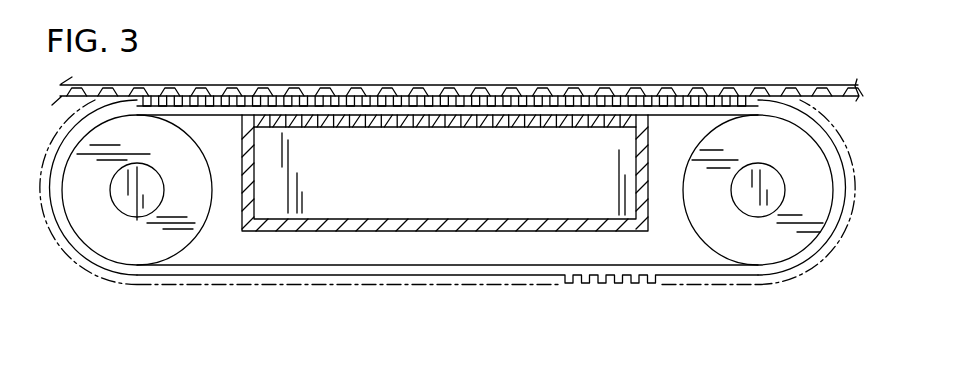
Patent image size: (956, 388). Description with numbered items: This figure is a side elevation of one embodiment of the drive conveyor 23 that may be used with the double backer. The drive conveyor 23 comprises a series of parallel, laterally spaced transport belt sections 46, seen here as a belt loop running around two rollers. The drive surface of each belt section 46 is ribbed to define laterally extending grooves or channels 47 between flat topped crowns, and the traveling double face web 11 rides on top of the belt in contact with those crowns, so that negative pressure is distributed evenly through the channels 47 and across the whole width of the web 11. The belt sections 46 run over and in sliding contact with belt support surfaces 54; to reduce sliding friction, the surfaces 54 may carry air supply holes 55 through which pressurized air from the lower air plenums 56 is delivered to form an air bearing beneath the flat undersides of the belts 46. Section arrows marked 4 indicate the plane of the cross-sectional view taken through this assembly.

The double face web 11 is at (648, 88).
The drive conveyor 23 is at (206, 295).
The transport belt sections 46 is at (325, 103).
The grooves or channels 47 is at (483, 103).
The belt support surfaces 54 is at (393, 117).
The air supply holes 55 is at (417, 124).
The lower air plenums 56 is at (462, 208).
The section line 4- 4 is at (530, 55).